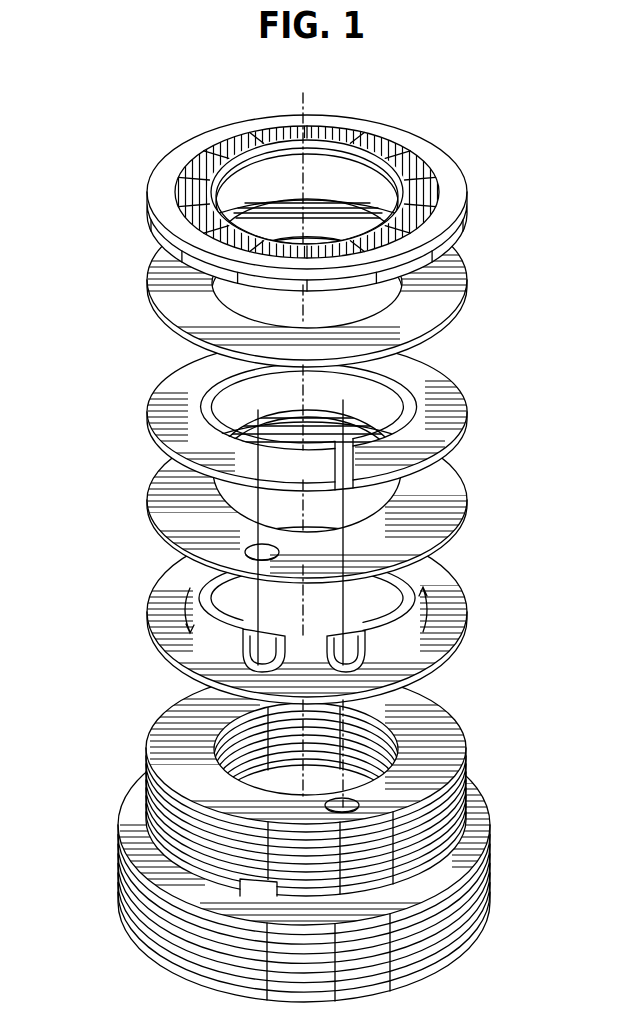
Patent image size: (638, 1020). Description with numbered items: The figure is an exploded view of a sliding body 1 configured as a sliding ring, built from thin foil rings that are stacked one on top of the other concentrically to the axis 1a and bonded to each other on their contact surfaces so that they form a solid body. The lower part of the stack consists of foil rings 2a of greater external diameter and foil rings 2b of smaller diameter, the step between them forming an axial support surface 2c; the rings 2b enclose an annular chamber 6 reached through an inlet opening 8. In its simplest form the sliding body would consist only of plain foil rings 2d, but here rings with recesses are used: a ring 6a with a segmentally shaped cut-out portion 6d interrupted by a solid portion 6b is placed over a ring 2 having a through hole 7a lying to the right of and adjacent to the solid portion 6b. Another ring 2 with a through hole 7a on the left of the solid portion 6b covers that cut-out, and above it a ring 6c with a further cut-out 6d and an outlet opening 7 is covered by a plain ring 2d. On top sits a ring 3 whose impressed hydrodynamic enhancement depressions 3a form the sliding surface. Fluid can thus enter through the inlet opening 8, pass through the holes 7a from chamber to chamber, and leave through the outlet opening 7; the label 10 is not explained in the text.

The sliding body 1 is at (88, 861).
The axis 1a is at (304, 103).
The ring 2 is at (313, 603).
The foil rings 2a is at (335, 863).
The foil rings 2b is at (342, 839).
The axial support surface 2c is at (486, 846).
The foil ring 2d is at (443, 293).
The ring 3 is at (335, 198).
The hydrodynamic enhancement depressions 3a is at (403, 152).
The annular chamber 6 is at (306, 565).
The ring 6a is at (470, 620).
The solid portion 6b is at (415, 680).
The ring 6c is at (460, 408).
The cut-out portion 6d is at (442, 606).
The outlet opening 7 is at (360, 487).
The through hole 7a is at (359, 803).
The inlet opening 8 is at (248, 890).
The top ring 10 is at (335, 183).